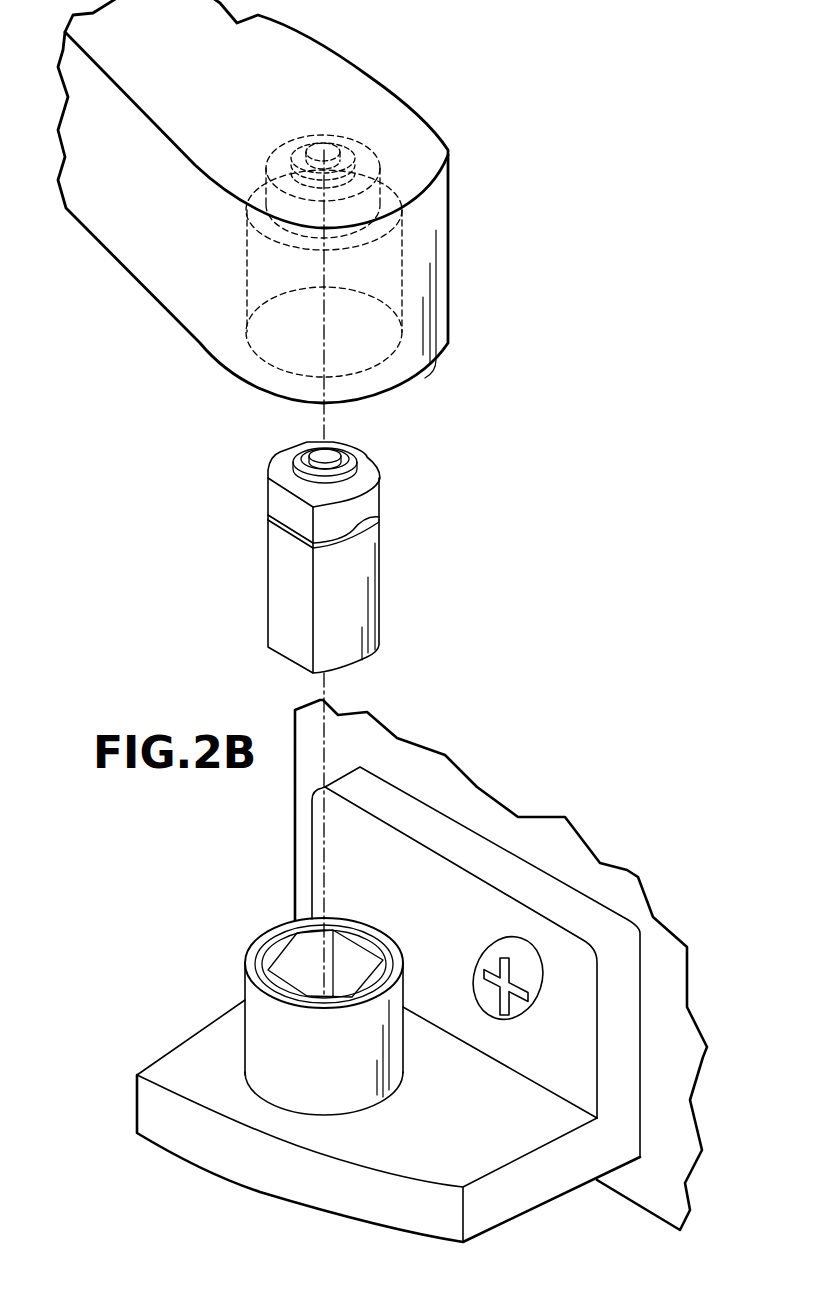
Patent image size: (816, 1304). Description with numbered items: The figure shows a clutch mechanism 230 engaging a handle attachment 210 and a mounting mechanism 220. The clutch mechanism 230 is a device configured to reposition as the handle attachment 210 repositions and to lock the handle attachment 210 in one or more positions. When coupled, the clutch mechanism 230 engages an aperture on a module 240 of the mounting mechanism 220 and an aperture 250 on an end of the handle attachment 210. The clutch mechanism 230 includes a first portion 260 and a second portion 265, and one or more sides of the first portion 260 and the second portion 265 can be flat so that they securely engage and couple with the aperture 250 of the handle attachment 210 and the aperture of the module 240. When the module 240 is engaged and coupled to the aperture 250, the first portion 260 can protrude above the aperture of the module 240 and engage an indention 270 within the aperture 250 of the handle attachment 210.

The handle attachment 210 is at (448, 243).
The mounting mechanism 220 is at (384, 971).
The clutch mechanism 230 is at (331, 555).
The module 240 is at (245, 978).
The aperture 250 is at (246, 269).
The first portion 260 is at (268, 500).
The second portion 265 is at (268, 600).
The indention 270 is at (356, 150).